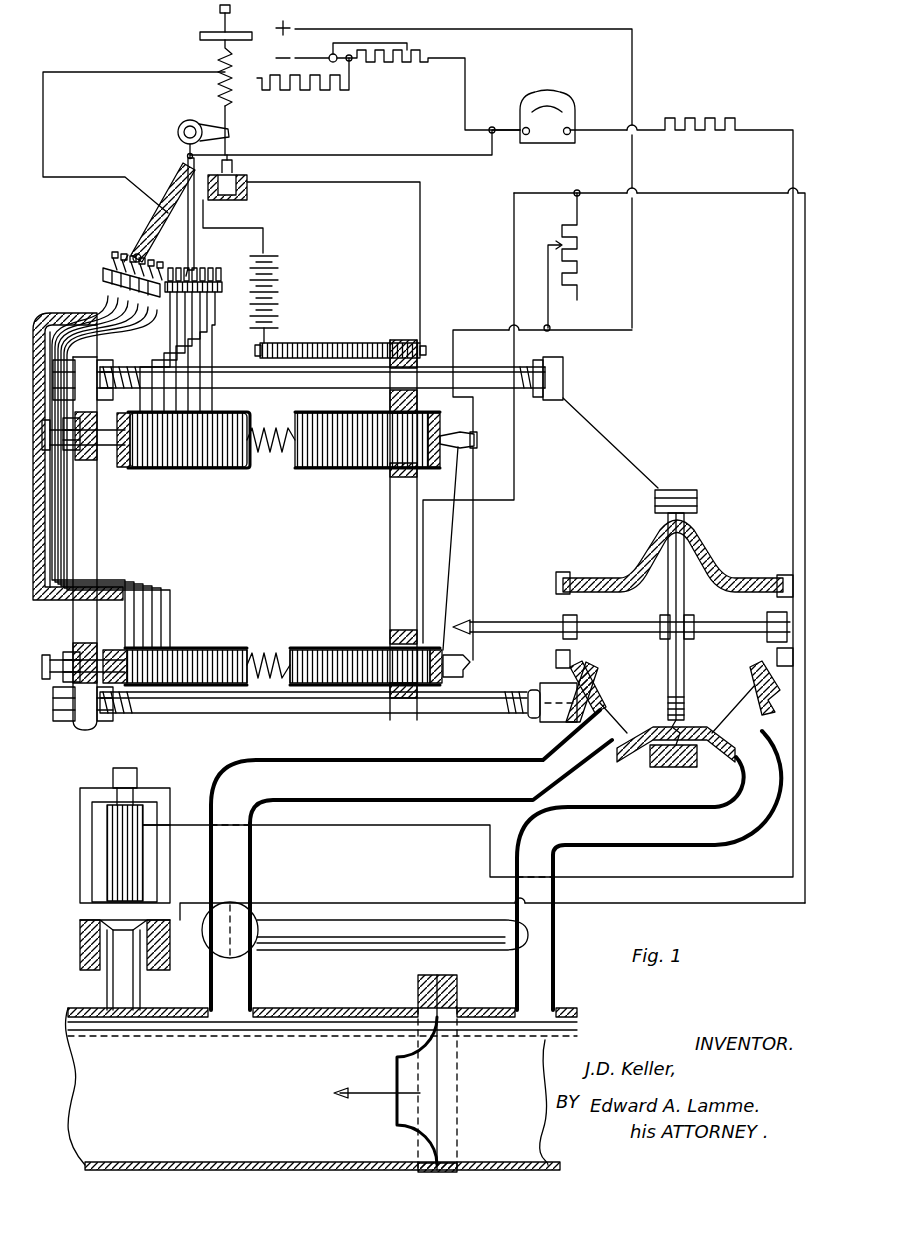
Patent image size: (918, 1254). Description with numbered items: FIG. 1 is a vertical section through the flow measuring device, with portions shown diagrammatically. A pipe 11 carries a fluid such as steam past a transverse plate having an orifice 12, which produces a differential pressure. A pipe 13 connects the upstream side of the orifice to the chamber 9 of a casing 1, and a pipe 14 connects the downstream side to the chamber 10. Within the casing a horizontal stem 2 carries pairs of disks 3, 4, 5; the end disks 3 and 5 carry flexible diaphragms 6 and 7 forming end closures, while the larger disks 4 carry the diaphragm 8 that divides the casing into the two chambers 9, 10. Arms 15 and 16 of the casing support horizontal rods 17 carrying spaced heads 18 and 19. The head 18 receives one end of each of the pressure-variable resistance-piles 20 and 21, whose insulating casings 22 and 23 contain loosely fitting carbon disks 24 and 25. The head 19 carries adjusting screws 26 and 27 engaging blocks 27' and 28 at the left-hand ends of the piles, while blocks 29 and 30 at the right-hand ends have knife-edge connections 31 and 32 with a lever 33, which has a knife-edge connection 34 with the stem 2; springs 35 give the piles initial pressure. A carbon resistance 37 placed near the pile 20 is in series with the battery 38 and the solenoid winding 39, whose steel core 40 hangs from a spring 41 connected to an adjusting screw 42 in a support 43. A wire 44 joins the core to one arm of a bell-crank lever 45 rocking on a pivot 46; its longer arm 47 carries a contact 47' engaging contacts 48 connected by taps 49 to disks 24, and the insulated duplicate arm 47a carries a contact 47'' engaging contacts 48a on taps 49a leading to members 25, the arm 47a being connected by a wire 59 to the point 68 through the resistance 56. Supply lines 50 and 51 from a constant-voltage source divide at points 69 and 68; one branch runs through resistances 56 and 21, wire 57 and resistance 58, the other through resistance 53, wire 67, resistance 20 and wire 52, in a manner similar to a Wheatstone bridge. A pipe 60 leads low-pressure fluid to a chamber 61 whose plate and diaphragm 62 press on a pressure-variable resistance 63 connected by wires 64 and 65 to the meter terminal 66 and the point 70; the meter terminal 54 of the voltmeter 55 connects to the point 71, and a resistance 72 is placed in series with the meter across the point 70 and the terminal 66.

The casing 1 is at (714, 550).
The stem 2 is at (640, 622).
The disks 3 is at (556, 658).
The disks 4 is at (668, 660).
The disks 5 is at (777, 655).
The flexible diaphragm 6 is at (556, 590).
The flexible diaphragm 7 is at (777, 595).
The flexible diaphragm 8 is at (683, 538).
The chamber 9 is at (744, 682).
The chamber 10 is at (597, 680).
The pipe 11 is at (321, 1089).
The orifice 12 is at (405, 1078).
The pipe 13 is at (649, 870).
The pipe 14 is at (411, 860).
The arm 15 is at (595, 426).
The arm 16 is at (548, 722).
The horizontal rods 17 is at (487, 367).
The head 18 is at (390, 552).
The head 19 is at (98, 562).
The pressure-variable resistance-pile 20 is at (213, 470).
The pressure-variable resistance-pile 21 is at (258, 648).
The insulating casing 22 is at (183, 470).
The insulating casing 23 is at (208, 648).
The disks 24 is at (140, 470).
The disks 25 is at (182, 648).
The adjusting screw 26 is at (60, 402).
The adjusting screw 27 is at (82, 651).
The block 27' is at (87, 466).
The block 28 is at (116, 650).
The block 29 is at (437, 470).
The block 30 is at (440, 685).
The knife-edge connection 31 is at (464, 432).
The knife-edge connection 32 is at (470, 662).
The lever 33 is at (474, 563).
The knife-edge connection 34 is at (470, 618).
The springs 35 is at (270, 458).
The carbon resistance 37 is at (345, 343).
The battery 38 is at (280, 275).
The solenoid winding 39 is at (248, 200).
The steel core 40 is at (235, 170).
The spring 41 is at (217, 96).
The adjusting screw 42 is at (218, 15).
The support 43 is at (200, 38).
The wire 44 is at (235, 122).
The bell-crank lever 45 is at (182, 153).
The pivot 46 is at (178, 132).
The arm 47 is at (206, 214).
The contact 47' is at (171, 257).
The contact 47'' is at (96, 238).
The arm 47a is at (158, 218).
The contacts 48 is at (207, 270).
The contacts 48a is at (112, 258).
The taps 49 is at (214, 345).
The taps 49a is at (104, 293).
The current supply line 50 is at (547, 30).
The current supply line 51 is at (351, 47).
The wire 52 is at (473, 330).
The resistance 53 is at (415, 62).
The meter terminal 54 is at (526, 136).
The meter 55 is at (572, 96).
The resistance 56 is at (303, 85).
The wire 57 is at (470, 418).
The resistance 58 is at (578, 272).
The wire 59 is at (87, 178).
The pipe 60 is at (106, 985).
The chamber 61 is at (168, 945).
The plate and flexible diaphragm 62 is at (82, 947).
The pressure-variable resistance 63 is at (105, 878).
The wire 64 is at (353, 825).
The wire 65 is at (343, 903).
The meter terminal 66 is at (578, 131).
The wire 67 is at (372, 155).
The point 68 is at (351, 62).
The point 69 is at (552, 327).
The point 70 is at (579, 192).
The point 71 is at (492, 117).
The resistance 72 is at (700, 128).